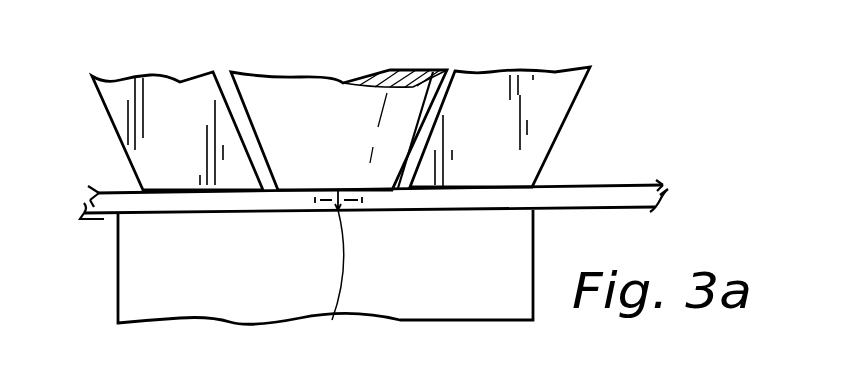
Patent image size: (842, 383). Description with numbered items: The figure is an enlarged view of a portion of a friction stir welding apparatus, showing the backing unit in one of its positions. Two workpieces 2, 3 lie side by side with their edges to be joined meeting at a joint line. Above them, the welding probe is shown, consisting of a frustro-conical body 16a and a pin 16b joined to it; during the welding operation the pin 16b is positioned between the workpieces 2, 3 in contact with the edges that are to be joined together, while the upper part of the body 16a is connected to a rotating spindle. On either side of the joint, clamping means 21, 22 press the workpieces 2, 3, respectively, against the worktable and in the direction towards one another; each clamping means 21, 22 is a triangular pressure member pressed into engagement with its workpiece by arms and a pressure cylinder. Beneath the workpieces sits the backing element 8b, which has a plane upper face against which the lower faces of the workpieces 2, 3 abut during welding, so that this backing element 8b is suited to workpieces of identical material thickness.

The workpiece 2 is at (668, 193).
The workpiece 3 is at (88, 205).
The clamping means 22 is at (118, 107).
The frustro-conical body 16a is at (295, 100).
The clamping means 21 is at (558, 100).
The backing element 8b is at (512, 248).
The pin 16b is at (333, 322).